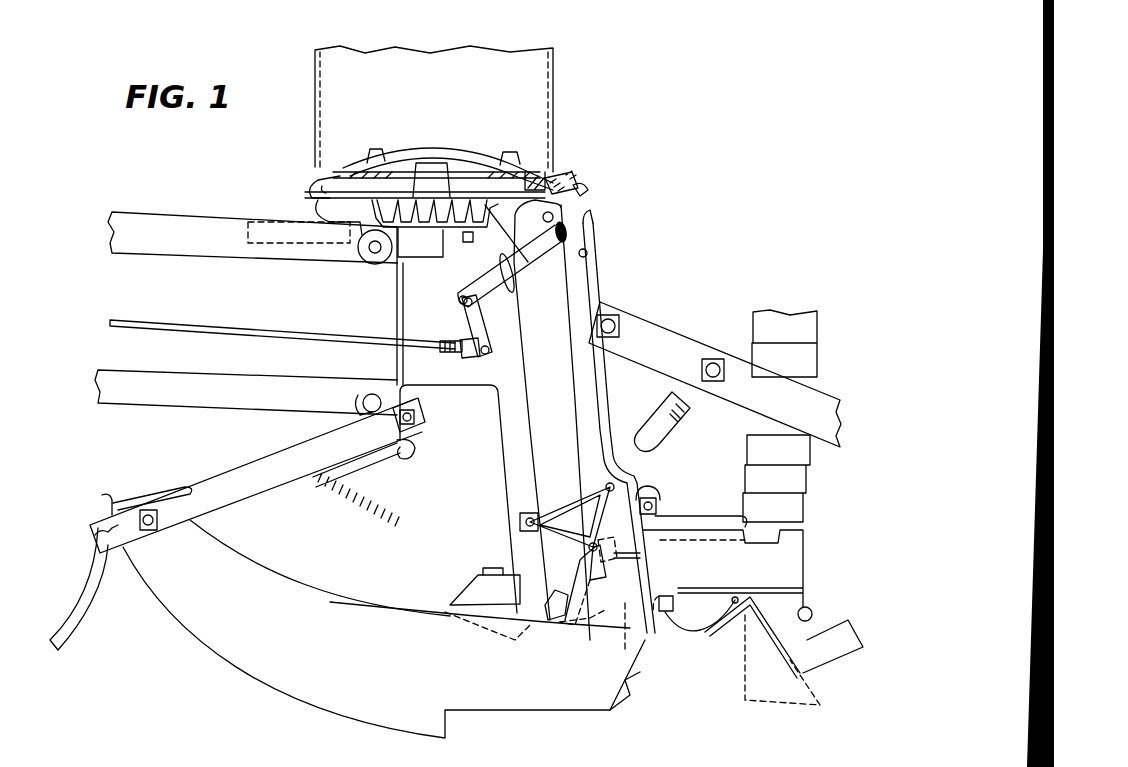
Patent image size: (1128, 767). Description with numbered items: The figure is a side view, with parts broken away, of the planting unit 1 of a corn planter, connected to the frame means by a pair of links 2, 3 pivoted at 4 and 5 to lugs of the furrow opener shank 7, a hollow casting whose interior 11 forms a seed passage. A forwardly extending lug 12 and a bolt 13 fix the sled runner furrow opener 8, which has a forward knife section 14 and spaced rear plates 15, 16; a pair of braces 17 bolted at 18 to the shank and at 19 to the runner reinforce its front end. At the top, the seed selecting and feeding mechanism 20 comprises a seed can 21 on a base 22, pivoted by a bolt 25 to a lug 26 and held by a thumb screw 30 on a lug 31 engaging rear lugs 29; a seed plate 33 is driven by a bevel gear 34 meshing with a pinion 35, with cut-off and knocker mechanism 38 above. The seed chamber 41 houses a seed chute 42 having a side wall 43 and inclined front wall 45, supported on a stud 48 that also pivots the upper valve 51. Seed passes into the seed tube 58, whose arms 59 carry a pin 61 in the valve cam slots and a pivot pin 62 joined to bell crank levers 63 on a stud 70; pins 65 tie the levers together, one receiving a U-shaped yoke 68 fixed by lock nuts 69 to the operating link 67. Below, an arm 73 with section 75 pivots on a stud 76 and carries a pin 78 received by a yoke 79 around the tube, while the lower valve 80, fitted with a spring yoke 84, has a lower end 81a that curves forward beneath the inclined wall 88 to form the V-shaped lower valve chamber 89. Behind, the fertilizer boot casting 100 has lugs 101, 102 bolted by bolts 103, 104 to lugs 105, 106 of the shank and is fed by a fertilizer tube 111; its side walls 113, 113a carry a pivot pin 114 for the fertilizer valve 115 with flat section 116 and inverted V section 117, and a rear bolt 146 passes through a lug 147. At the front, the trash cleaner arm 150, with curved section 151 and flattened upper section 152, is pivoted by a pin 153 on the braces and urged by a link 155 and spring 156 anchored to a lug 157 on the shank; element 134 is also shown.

The planting unit 1 is at (670, 150).
The link 2 is at (184, 186).
The link 3 is at (230, 364).
The pivot 4 is at (616, 658).
The pivot 5 is at (372, 392).
The furrow opener shank 7 is at (608, 294).
The furrow opener 8 is at (244, 559).
The hollow 11 is at (504, 469).
The forwardly extending lug 12 is at (463, 588).
The bolt 13 is at (492, 567).
The soil engaging knife section 14 is at (197, 640).
The plate 15 is at (610, 705).
The plate 16 is at (628, 690).
The braces 17 is at (262, 488).
The bolt 18 is at (418, 415).
The bolt 19 is at (160, 522).
The seed selecting and feeding mechanism 20 is at (644, 86).
The seed can 21 is at (557, 70).
The base 22 is at (530, 172).
The bolt 25 is at (312, 180).
The forwardly extending lug 26 is at (332, 212).
The rear lugs 29 is at (577, 183).
The thumb screw 30 is at (585, 182).
The lug 31 is at (588, 197).
The seed plate 33 is at (480, 175).
The bevel gear 34 is at (426, 195).
The pinion 35 is at (355, 255).
The cut-off and knocker mechanism 38 is at (501, 164).
The seed chamber 41 is at (590, 255).
The seed chute 42 is at (560, 178).
The side wall 43 is at (480, 234).
The inclined front wall 45 is at (495, 240).
The stud 48 is at (570, 212).
The upper valve 51 is at (572, 228).
The seed tube 58 is at (528, 370).
The arms 59 is at (530, 250).
The pin 61 is at (572, 238).
The pivot pin 62 is at (512, 288).
The bell crank levers 63 is at (446, 292).
The pins 65 is at (478, 330).
The operating link 67 is at (240, 330).
The U-shaped yoke 68 is at (470, 357).
The lock nuts 69 is at (445, 355).
The stud 70 is at (460, 308).
The arm 73 is at (647, 545).
The arm section 75 is at (575, 495).
The stud 76 is at (612, 485).
The pin 78 is at (522, 520).
The yoke 79 is at (565, 515).
The lower valve 80 is at (605, 585).
The lower end of valve member 81a is at (545, 630).
The spring yoke 84 is at (588, 557).
The inclined wall 88 is at (545, 600).
The lower valve chamber 89 is at (566, 625).
The fertilizer boot casting 100 is at (799, 546).
The lug 101 is at (660, 503).
The lug 102 is at (672, 622).
The bolt 103 is at (670, 480).
The bolt 104 is at (680, 590).
The lug 105 is at (648, 495).
The lug 106 is at (662, 615).
The fertilizer tube 111 is at (805, 362).
The side wall 113 is at (708, 535).
The side wall section 113a is at (790, 680).
The pivot pin 114 is at (730, 603).
The fertilizer valve 115 is at (779, 678).
The valve section 116 is at (770, 630).
The valve section 117 is at (833, 632).
The rod 134 is at (642, 556).
The rear bolt 146 is at (810, 608).
The lug 147 is at (806, 600).
The trash cleaner arm 150 is at (78, 583).
The curved section 151 is at (66, 628).
The upper flattened section 152 is at (105, 493).
The pin 153 is at (93, 530).
The link 155 is at (170, 493).
The spring 156 is at (360, 466).
The lug 157 is at (404, 463).